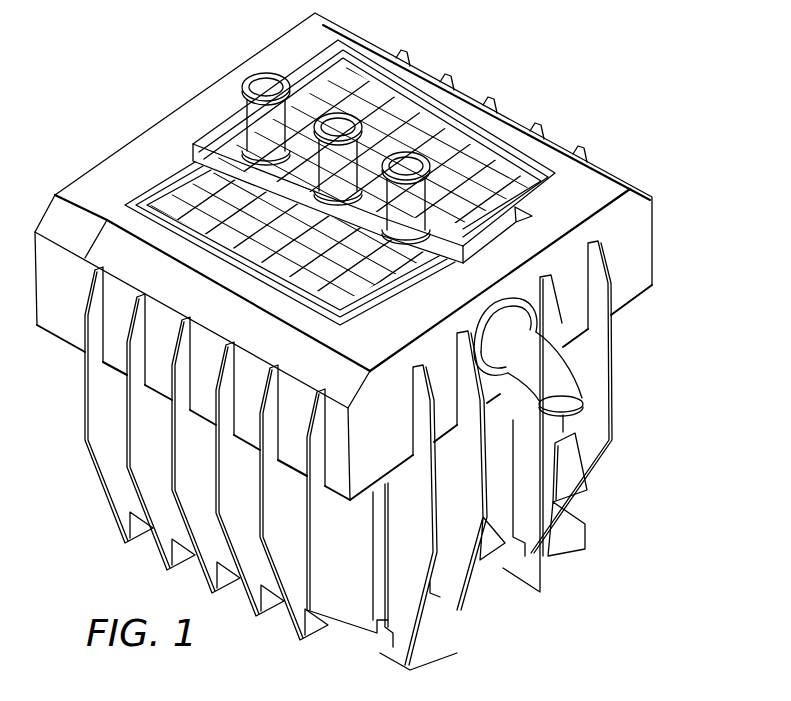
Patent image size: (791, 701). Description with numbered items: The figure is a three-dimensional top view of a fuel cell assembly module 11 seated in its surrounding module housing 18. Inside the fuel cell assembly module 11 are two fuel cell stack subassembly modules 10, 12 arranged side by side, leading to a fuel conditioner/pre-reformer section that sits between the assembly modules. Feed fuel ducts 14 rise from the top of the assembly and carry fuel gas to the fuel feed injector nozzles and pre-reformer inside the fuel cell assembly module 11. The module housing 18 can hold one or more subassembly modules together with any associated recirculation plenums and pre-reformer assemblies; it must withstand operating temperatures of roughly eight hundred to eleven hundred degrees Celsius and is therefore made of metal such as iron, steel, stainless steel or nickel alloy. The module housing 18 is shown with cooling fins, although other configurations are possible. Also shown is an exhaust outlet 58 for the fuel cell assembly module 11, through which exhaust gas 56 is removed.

The fuel cell stack subassembly module 10 is at (390, 128).
The fuel cell assembly module 11 is at (562, 92).
The fuel cell stack subassembly module 12 is at (212, 199).
The feed fuel duct 14 is at (240, 118).
The module housing 18 is at (497, 493).
The exhaust gas 56 is at (573, 473).
The exhaust outlet 58 is at (572, 380).